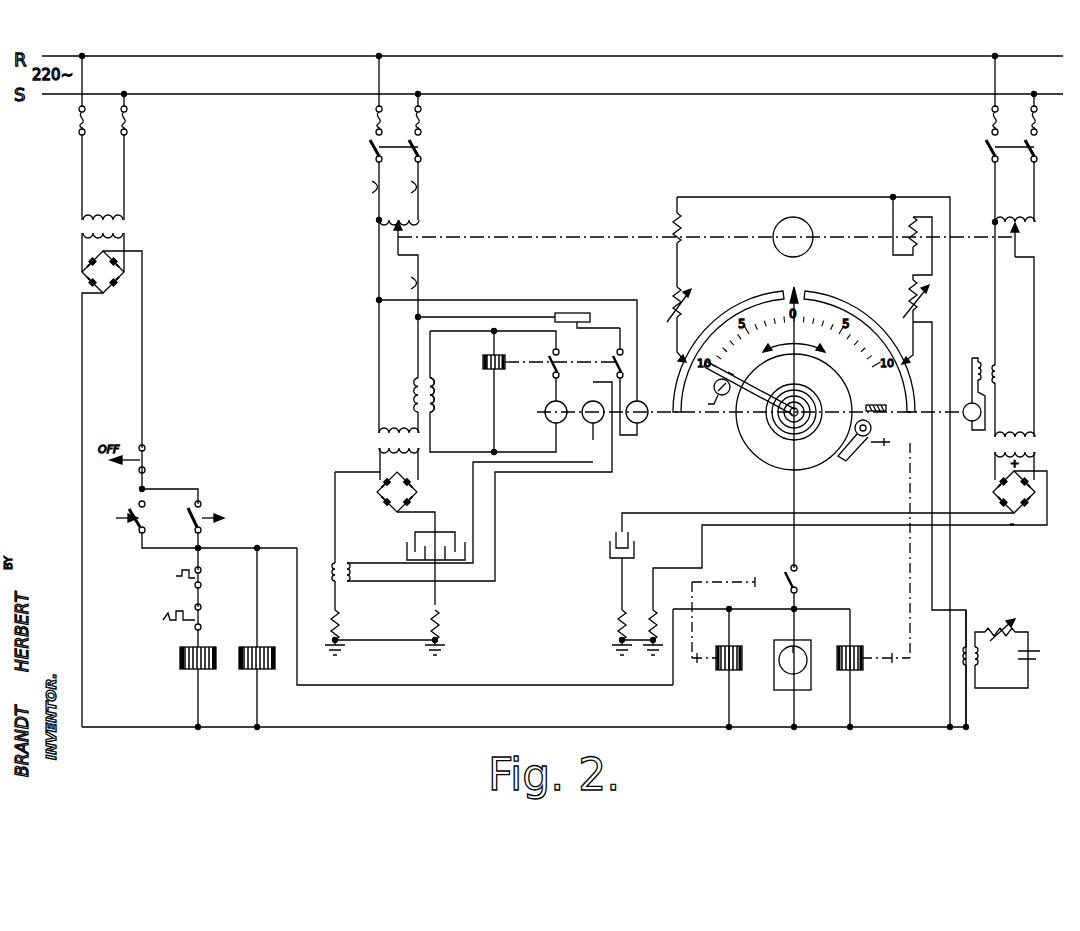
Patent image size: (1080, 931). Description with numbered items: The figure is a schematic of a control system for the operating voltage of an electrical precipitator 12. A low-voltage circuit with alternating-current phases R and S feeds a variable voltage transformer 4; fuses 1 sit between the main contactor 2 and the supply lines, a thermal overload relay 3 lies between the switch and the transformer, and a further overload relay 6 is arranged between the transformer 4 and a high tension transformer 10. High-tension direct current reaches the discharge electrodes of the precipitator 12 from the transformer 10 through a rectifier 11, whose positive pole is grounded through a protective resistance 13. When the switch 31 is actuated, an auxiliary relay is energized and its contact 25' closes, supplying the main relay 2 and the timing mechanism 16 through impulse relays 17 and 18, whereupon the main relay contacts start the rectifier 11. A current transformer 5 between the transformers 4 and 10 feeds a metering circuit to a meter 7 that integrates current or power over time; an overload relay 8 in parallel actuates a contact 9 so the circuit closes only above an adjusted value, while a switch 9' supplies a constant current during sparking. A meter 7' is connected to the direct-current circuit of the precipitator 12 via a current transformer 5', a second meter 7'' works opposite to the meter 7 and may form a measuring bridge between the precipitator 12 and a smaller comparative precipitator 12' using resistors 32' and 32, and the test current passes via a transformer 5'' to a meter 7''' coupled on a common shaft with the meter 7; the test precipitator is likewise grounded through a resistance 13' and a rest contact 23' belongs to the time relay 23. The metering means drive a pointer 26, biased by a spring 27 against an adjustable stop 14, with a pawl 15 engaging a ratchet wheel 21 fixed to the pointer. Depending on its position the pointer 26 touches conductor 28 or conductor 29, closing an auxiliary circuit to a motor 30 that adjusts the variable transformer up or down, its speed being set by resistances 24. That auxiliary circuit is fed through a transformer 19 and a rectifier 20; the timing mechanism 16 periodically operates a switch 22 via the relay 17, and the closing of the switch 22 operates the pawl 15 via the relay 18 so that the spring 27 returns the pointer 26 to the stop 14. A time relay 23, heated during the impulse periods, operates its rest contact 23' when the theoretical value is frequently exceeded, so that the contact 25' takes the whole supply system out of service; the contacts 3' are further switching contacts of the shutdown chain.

The fuses 1 is at (370, 118).
The main contactor 2 is at (258, 644).
The thermal overload relay 3 is at (375, 181).
The contacts 3' is at (173, 615).
The variable voltage transformer 4 is at (377, 220).
The current transformer 5 is at (435, 395).
The current transformer 5' is at (333, 573).
The transformer 5'' is at (1006, 374).
The overload relay 6 is at (420, 283).
The meter 7 is at (557, 404).
The meter 7' is at (593, 401).
The second current meter 7'' is at (642, 403).
The meter 7''' is at (968, 394).
The overload relay 8 is at (482, 362).
The contact 9 is at (562, 359).
The switch 9' is at (608, 357).
The high tension transformer 10 is at (378, 433).
The rectifier 11 is at (378, 496).
The electrical precipitator 12 is at (420, 546).
The comparative precipitator 12' is at (637, 535).
The protective resistance 13 is at (350, 623).
The resistor 13' is at (650, 623).
The adjustable stop 14 is at (700, 399).
The pawl 15 is at (848, 460).
The timing mechanism 16 is at (801, 643).
The impulse relay 17 is at (713, 670).
The impulse relay 18 is at (860, 647).
The transformer 19 is at (80, 226).
The rectifier 20 is at (80, 275).
The ratchet wheel 21 is at (815, 480).
The switch 22 is at (784, 577).
The time relay 23 is at (1012, 668).
The rest contact 23' is at (173, 577).
The resistances 24 is at (909, 294).
The contact of the auxiliary relay 25' is at (220, 512).
The pointer 26 is at (790, 354).
The spring 27 is at (810, 411).
The conductor 28 is at (748, 285).
The conductor 29 is at (861, 301).
The motor 30 is at (808, 229).
The switch 31 is at (118, 514).
The resistor 32 is at (426, 623).
The resistor 32' is at (608, 625).